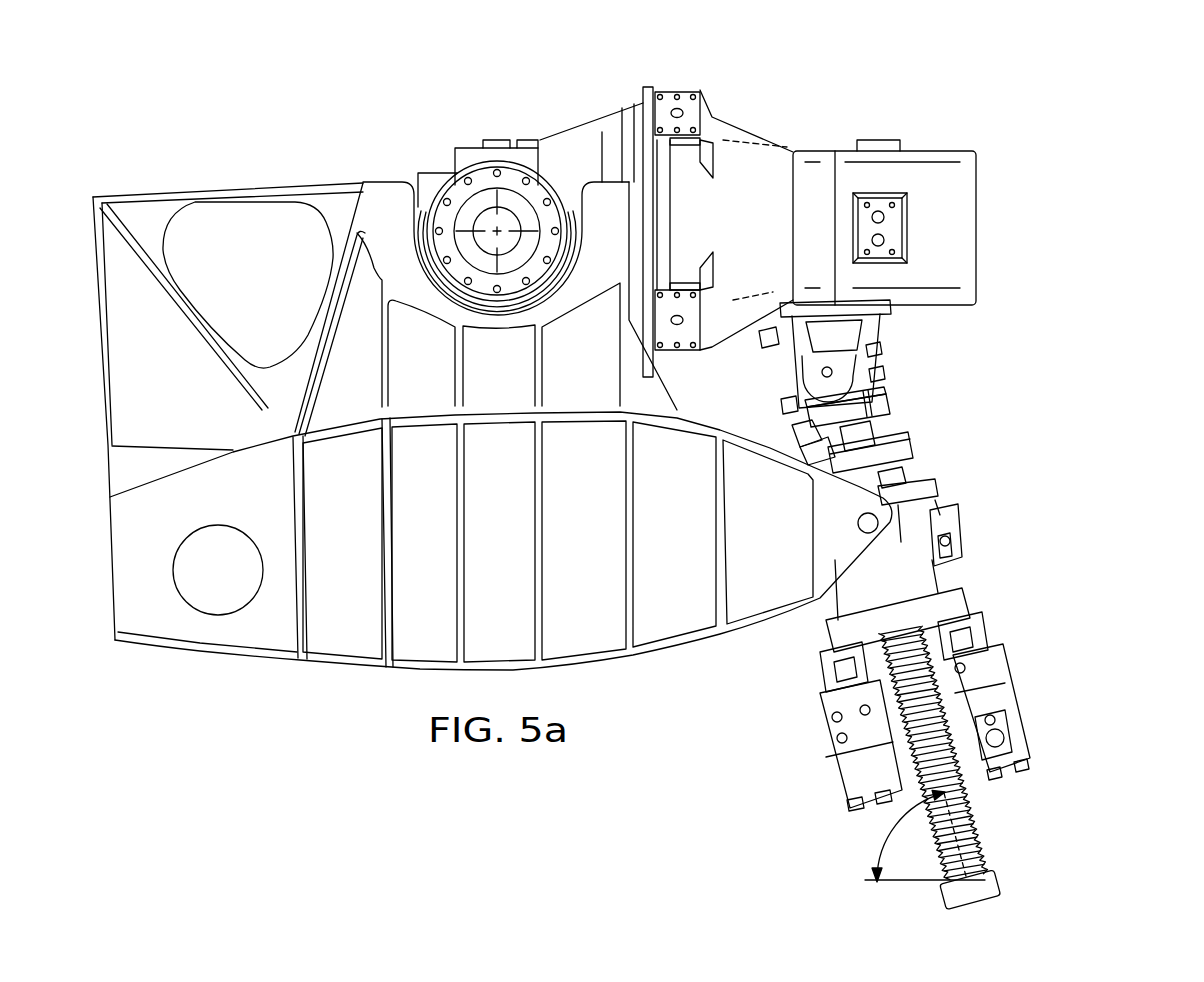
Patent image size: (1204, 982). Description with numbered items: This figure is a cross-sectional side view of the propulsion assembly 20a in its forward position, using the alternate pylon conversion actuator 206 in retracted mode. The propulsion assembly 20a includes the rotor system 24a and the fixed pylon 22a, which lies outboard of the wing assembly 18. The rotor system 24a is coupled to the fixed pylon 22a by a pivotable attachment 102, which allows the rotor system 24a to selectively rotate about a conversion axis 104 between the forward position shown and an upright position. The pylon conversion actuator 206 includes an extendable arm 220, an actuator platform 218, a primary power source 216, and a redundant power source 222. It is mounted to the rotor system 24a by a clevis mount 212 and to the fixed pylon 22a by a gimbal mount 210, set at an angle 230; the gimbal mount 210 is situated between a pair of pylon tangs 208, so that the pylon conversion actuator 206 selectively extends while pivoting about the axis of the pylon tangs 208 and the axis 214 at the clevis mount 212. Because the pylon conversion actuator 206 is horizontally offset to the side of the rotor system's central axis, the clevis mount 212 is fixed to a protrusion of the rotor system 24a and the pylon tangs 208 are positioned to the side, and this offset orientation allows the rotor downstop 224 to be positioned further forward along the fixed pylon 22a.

The wing assembly 18 is at (332, 664).
The propulsion assembly 20a is at (1022, 70).
The fixed pylon 22a is at (372, 188).
The rotor system 24a is at (925, 146).
The pivotable attachment 102 is at (538, 190).
The conversion axis 104 is at (497, 231).
The pylon conversion actuator 206 is at (1092, 580).
The pylon tangs 208 is at (916, 507).
The gimbal mount 210 is at (960, 545).
The clevis mount 212 is at (845, 333).
The axis 214 is at (820, 370).
The primary power source 216 is at (888, 407).
The actuator platform 218 is at (906, 446).
The extendable arm 220 is at (986, 848).
The redundant power source 222 is at (1022, 710).
The rotor downstop 224 is at (803, 428).
The angle 230 is at (893, 823).